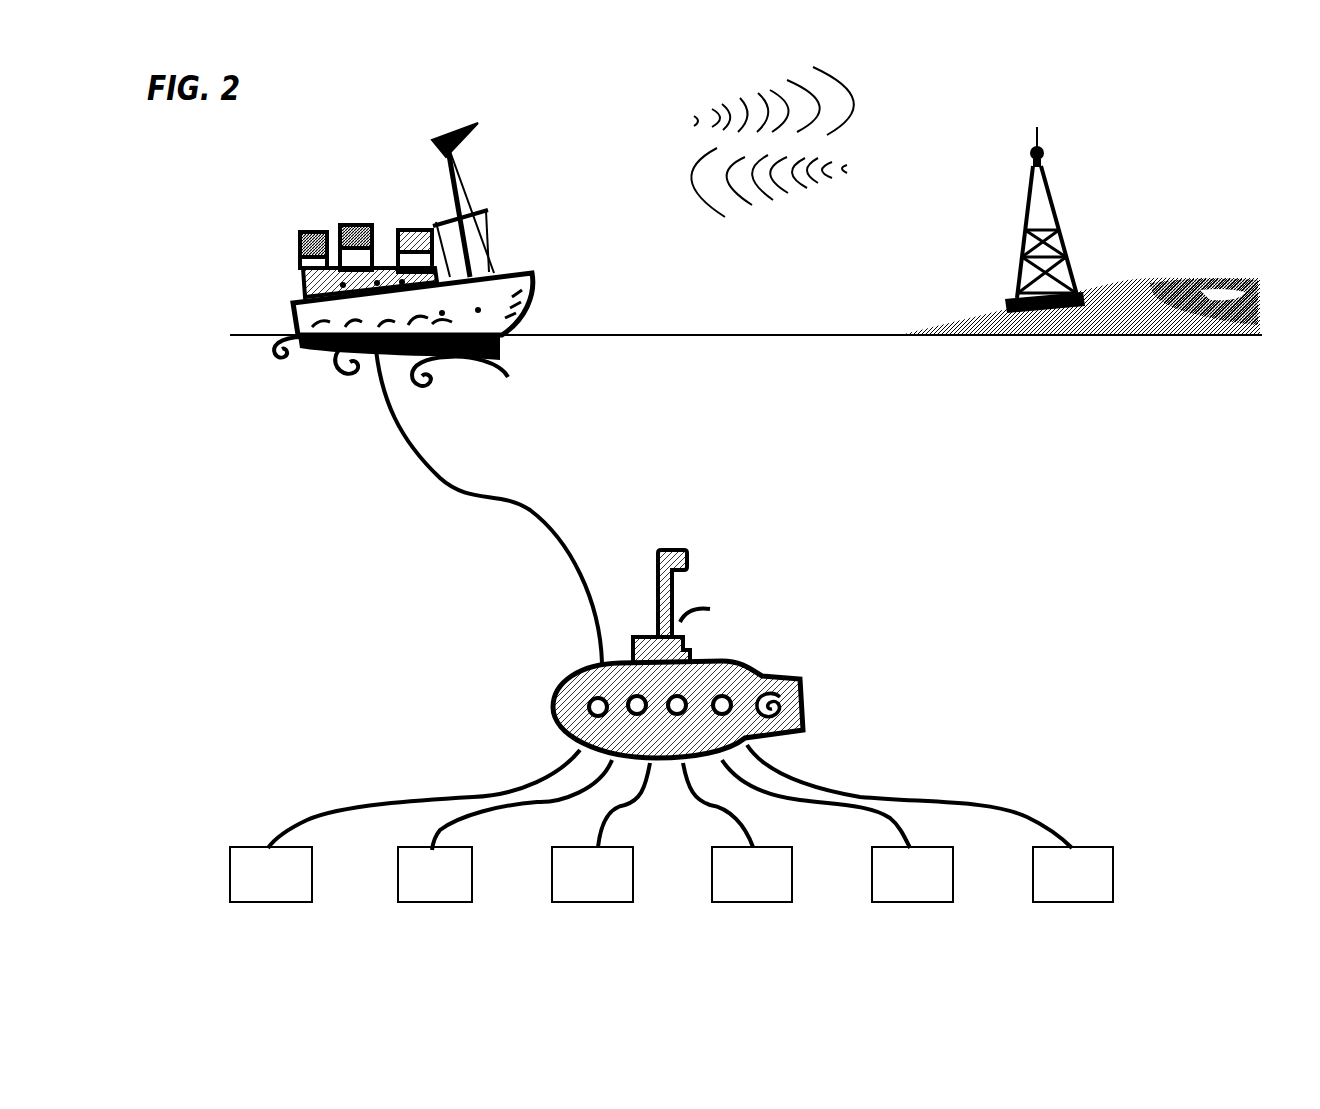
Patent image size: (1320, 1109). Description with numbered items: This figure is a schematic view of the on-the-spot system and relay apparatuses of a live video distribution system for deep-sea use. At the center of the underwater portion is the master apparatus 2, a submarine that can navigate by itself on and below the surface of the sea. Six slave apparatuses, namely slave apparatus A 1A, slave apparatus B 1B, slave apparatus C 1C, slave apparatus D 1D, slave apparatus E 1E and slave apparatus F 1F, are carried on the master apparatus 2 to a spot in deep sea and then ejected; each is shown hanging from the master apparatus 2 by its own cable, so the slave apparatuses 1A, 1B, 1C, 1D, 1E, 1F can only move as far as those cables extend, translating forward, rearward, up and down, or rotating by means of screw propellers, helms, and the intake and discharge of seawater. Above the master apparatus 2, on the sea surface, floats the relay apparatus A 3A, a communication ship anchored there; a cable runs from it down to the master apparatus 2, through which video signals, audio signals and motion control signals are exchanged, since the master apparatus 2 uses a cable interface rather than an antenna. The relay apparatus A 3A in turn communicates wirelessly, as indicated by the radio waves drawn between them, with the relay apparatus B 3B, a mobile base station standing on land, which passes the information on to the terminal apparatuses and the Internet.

The relay apparatus A 3A is at (375, 262).
The relay apparatus B 3B is at (1048, 188).
The master apparatus 2 is at (740, 653).
The slave apparatus A 1A is at (268, 903).
The slave apparatus B 1B is at (430, 903).
The slave apparatus C 1C is at (598, 903).
The slave apparatus D 1D is at (753, 903).
The slave apparatus E 1E is at (912, 903).
The slave apparatus F 1F is at (1072, 903).